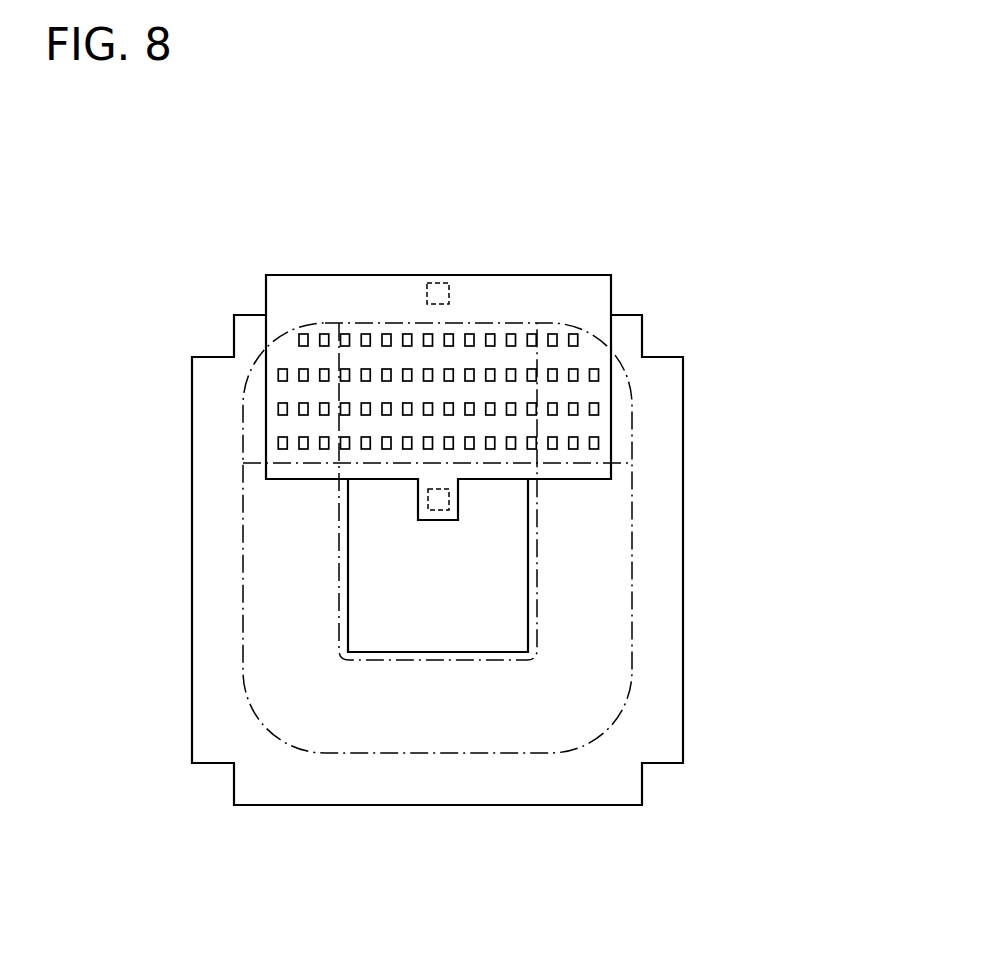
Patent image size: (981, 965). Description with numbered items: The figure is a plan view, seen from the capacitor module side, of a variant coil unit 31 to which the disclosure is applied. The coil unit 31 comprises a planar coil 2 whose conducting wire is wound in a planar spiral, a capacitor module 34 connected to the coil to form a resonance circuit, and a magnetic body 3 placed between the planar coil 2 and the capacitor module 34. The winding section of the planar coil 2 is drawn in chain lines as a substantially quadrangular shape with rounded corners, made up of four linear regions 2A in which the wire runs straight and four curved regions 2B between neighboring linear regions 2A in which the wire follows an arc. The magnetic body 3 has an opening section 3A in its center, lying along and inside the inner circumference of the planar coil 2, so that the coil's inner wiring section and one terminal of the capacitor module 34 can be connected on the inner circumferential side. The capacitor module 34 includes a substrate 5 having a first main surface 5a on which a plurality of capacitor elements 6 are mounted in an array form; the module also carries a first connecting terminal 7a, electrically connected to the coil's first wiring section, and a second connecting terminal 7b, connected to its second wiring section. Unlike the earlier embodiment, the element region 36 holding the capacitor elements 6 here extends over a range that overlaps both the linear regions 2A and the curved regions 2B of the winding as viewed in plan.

The coil unit 31 is at (177, 135).
The magnetic body 3 is at (703, 520).
The opening section 3A is at (348, 580).
The planar coil 2 is at (447, 773).
The linear region 2A is at (522, 322).
The curved region 2B is at (250, 378).
The substrate 5 is at (383, 275).
The first main surface 5a is at (345, 292).
The capacitor element 6 is at (537, 340).
The first connecting terminal 7a is at (450, 500).
The second connecting terminal 7b is at (437, 283).
The capacitor module 34 is at (545, 262).
The element region 36 is at (460, 329).